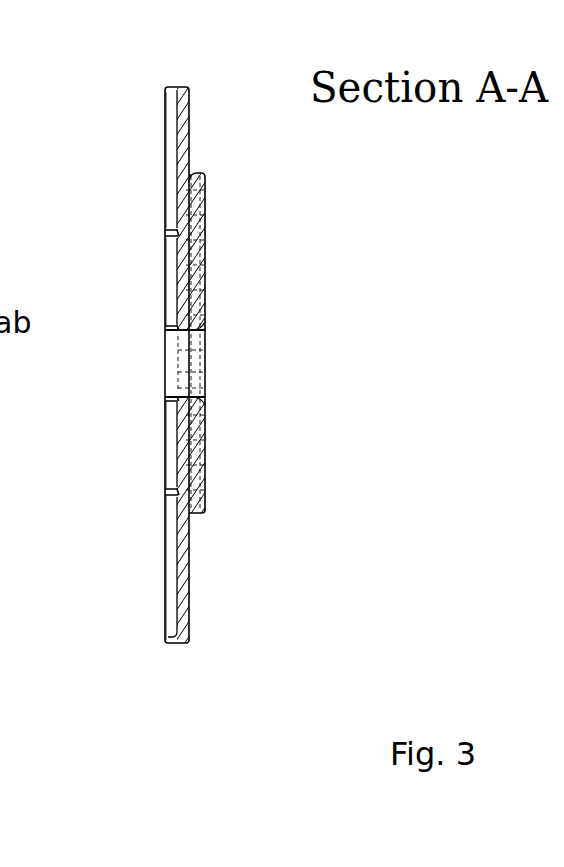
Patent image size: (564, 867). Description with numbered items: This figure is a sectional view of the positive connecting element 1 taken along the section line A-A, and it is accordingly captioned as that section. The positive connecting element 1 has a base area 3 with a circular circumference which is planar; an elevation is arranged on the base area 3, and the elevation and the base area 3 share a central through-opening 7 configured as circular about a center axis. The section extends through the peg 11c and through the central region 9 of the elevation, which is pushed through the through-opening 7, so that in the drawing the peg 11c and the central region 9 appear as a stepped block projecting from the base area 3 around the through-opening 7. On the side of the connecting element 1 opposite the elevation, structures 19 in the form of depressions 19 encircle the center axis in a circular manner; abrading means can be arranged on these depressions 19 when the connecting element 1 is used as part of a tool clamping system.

The positive connecting element 1 is at (189, 608).
The base area 3 is at (190, 570).
The central through-opening 7 is at (205, 350).
The central region 9 is at (200, 467).
The peg 11c is at (205, 201).
The structures 19 is at (170, 150).